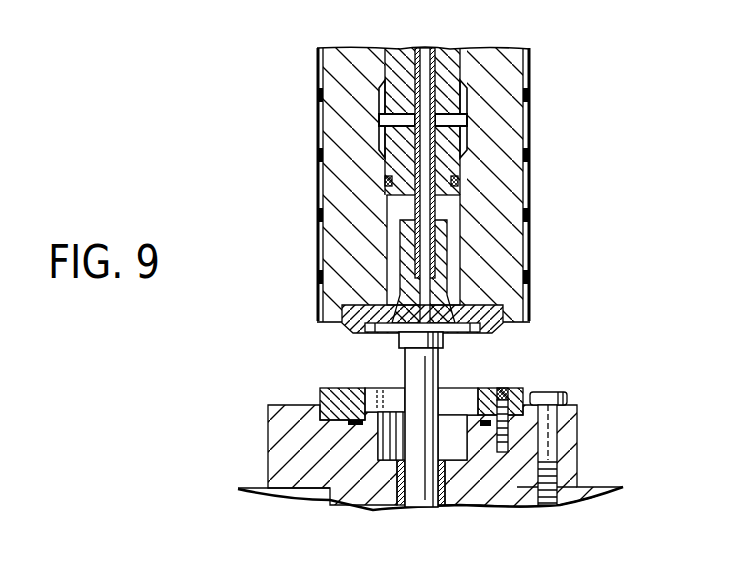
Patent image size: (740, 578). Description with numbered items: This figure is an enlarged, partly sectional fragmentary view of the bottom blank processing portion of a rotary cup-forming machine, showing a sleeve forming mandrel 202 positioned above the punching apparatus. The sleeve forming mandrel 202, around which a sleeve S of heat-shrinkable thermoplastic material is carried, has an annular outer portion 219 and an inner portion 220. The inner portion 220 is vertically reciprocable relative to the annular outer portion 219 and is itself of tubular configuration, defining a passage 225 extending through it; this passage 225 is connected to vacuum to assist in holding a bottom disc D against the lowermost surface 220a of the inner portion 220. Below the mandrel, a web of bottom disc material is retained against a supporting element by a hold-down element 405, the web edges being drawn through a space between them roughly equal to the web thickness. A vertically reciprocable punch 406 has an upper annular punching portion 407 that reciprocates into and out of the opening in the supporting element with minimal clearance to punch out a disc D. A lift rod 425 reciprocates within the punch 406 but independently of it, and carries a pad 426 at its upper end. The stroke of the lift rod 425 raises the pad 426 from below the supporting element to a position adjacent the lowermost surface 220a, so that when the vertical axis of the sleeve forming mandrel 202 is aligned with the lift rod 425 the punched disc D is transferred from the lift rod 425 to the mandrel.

The sleeve forming mandrel 202 is at (497, 92).
The annular outer portion 219 is at (503, 243).
The inner portion 220 is at (432, 206).
The lowermost surface 220a is at (505, 307).
The passage 225 is at (424, 47).
The hold-down element 405 is at (339, 388).
The punch 406 is at (375, 489).
The annular punching portion 407 is at (467, 396).
The lift rod 425 is at (413, 489).
The pad 426 is at (400, 338).
The sleeve S is at (317, 187).
The disc D is at (468, 327).